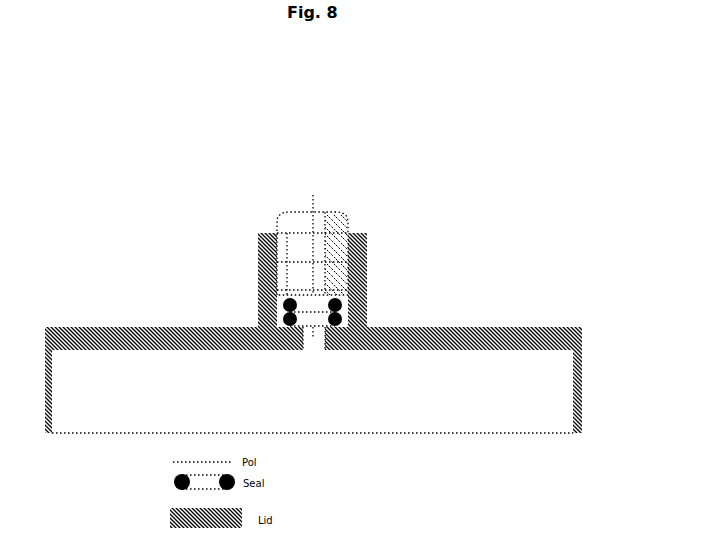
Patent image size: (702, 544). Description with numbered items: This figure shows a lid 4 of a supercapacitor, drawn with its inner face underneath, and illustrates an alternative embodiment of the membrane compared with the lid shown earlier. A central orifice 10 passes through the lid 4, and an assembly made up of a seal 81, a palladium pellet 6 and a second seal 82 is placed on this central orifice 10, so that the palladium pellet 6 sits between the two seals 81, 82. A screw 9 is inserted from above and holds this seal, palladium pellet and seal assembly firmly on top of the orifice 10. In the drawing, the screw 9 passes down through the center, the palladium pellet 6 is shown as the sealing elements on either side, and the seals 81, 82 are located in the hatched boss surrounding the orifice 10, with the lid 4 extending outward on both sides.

The lid 4 is at (462, 313).
The palladium pellet 6 is at (346, 309).
The seal 81 is at (271, 300).
The seal 82 is at (264, 315).
The screw 9 is at (331, 208).
The orifice 10 is at (313, 343).